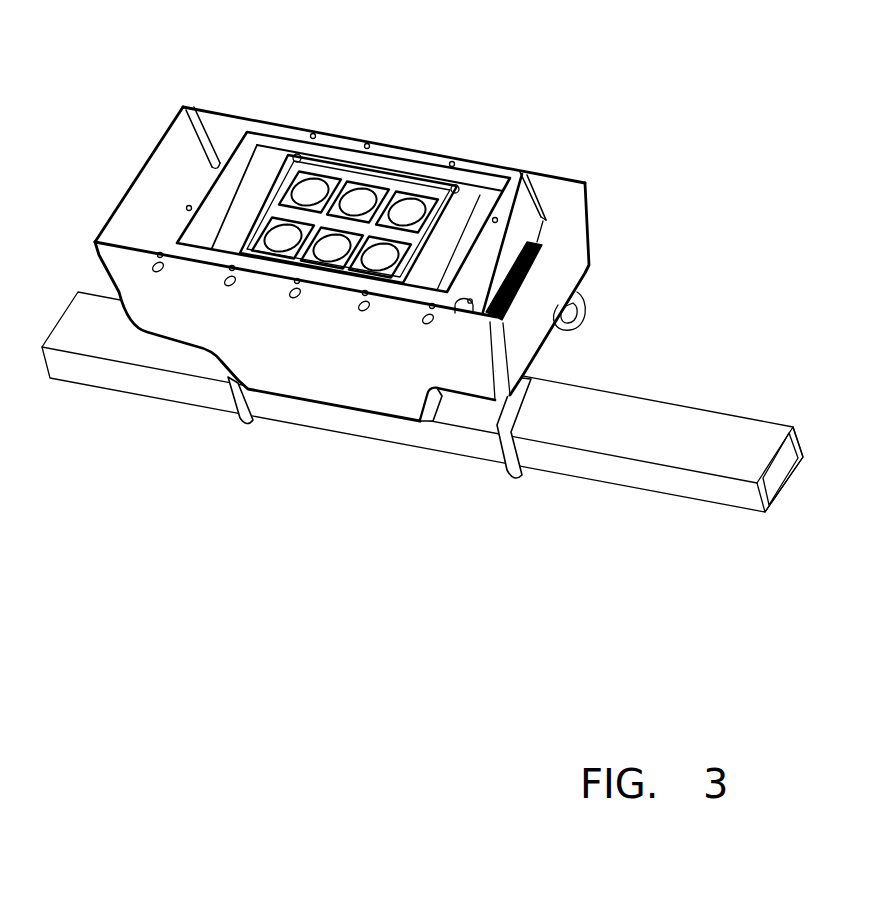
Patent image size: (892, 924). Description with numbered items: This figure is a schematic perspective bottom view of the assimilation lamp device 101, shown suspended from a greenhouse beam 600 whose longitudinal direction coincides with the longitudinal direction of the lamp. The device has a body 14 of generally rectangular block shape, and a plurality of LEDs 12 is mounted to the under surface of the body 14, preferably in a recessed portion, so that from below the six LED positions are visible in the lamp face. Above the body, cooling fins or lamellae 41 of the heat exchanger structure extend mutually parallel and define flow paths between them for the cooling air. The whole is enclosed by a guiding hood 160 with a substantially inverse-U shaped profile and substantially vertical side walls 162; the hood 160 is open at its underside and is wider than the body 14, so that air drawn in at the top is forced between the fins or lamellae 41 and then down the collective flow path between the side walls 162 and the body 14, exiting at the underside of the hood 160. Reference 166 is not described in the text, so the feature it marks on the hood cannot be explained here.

The assimilation lamp device 101 is at (422, 295).
The LEDs 12 is at (310, 188).
The body 14 is at (528, 204).
The cooling fins or lamellae 41 is at (547, 248).
The guiding hood 160 is at (310, 348).
The side walls 162 is at (563, 278).
The top wall 166 is at (169, 163).
The greenhouse beam 600 is at (619, 490).